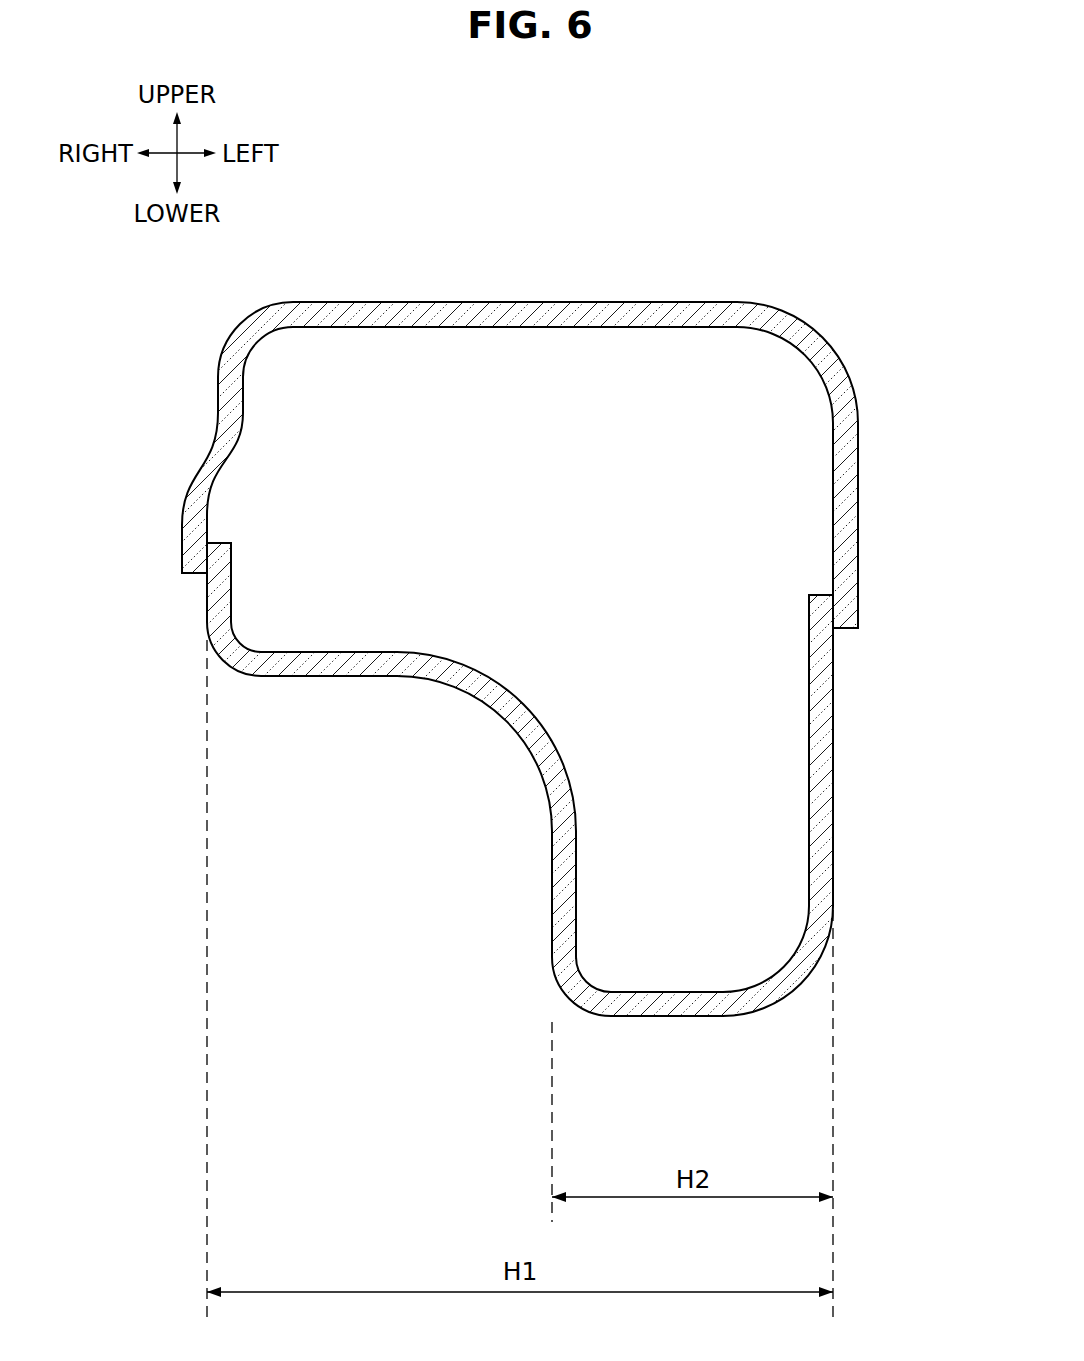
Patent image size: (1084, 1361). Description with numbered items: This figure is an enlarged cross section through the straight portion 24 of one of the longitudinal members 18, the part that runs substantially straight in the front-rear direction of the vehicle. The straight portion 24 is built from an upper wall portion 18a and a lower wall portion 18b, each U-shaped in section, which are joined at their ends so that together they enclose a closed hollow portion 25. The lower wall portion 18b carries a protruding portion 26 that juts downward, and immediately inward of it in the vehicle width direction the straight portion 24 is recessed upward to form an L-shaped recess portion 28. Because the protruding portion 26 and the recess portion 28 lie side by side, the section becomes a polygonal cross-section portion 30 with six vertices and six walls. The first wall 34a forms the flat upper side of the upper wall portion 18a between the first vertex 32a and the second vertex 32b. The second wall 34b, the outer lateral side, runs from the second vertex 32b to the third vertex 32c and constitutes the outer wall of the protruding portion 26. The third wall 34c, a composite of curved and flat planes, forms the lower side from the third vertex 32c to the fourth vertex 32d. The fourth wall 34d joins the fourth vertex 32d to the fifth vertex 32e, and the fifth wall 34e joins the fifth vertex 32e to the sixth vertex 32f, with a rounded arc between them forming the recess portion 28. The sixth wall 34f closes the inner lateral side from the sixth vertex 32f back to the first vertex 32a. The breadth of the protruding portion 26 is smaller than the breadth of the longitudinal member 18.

The longitudinal member 18 is at (542, 680).
The straight portion 24 is at (516, 411).
The upper wall portion 18a is at (474, 300).
The lower wall portion 18b is at (660, 1022).
The closed hollow portion 25 is at (523, 536).
The protruding portion 26 is at (692, 1017).
The recess portion 28 is at (470, 702).
The polygonal cross-section portion 30 is at (400, 820).
The first vertex 32a is at (247, 326).
The second vertex 32b is at (813, 342).
The third vertex 32c is at (803, 975).
The fourth vertex 32d is at (573, 1014).
The fifth vertex 32e is at (505, 733).
The sixth vertex 32f is at (229, 672).
The first wall 34a is at (553, 302).
The second wall 34b is at (835, 728).
The third wall 34c is at (722, 1017).
The fourth wall 34d is at (550, 903).
The fifth wall 34e is at (330, 678).
The sixth wall 34f is at (218, 403).